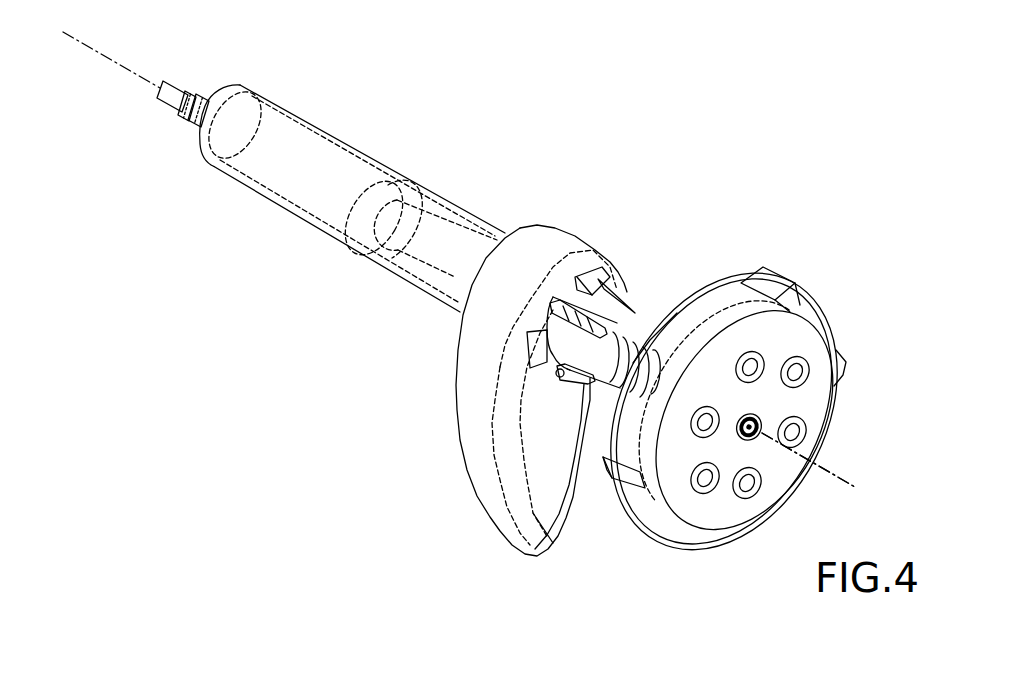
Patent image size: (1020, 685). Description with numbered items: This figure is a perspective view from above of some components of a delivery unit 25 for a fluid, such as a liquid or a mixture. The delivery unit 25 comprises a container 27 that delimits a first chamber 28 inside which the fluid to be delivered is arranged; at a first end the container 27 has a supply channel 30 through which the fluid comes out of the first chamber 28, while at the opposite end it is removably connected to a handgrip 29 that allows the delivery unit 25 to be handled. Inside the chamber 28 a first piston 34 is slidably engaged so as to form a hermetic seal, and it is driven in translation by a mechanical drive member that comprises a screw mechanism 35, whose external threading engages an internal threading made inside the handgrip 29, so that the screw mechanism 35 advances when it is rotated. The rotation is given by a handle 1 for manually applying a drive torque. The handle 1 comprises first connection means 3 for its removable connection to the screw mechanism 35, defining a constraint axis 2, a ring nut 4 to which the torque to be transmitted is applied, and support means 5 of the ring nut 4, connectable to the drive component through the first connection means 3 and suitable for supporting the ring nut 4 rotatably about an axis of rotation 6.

The handle 1 is at (873, 323).
The constraint axis 2 is at (843, 480).
The first connection means 3 is at (725, 470).
The ring nut 4 is at (787, 264).
The support means 5 is at (806, 401).
The axis of rotation 6 is at (843, 480).
The delivery unit 25 is at (705, 191).
The container 27 is at (268, 96).
The first chamber 28 is at (312, 147).
The handgrip 29 is at (470, 458).
The supply channel 30 is at (173, 80).
The first piston 34 is at (388, 175).
The screw mechanism 35 is at (635, 322).